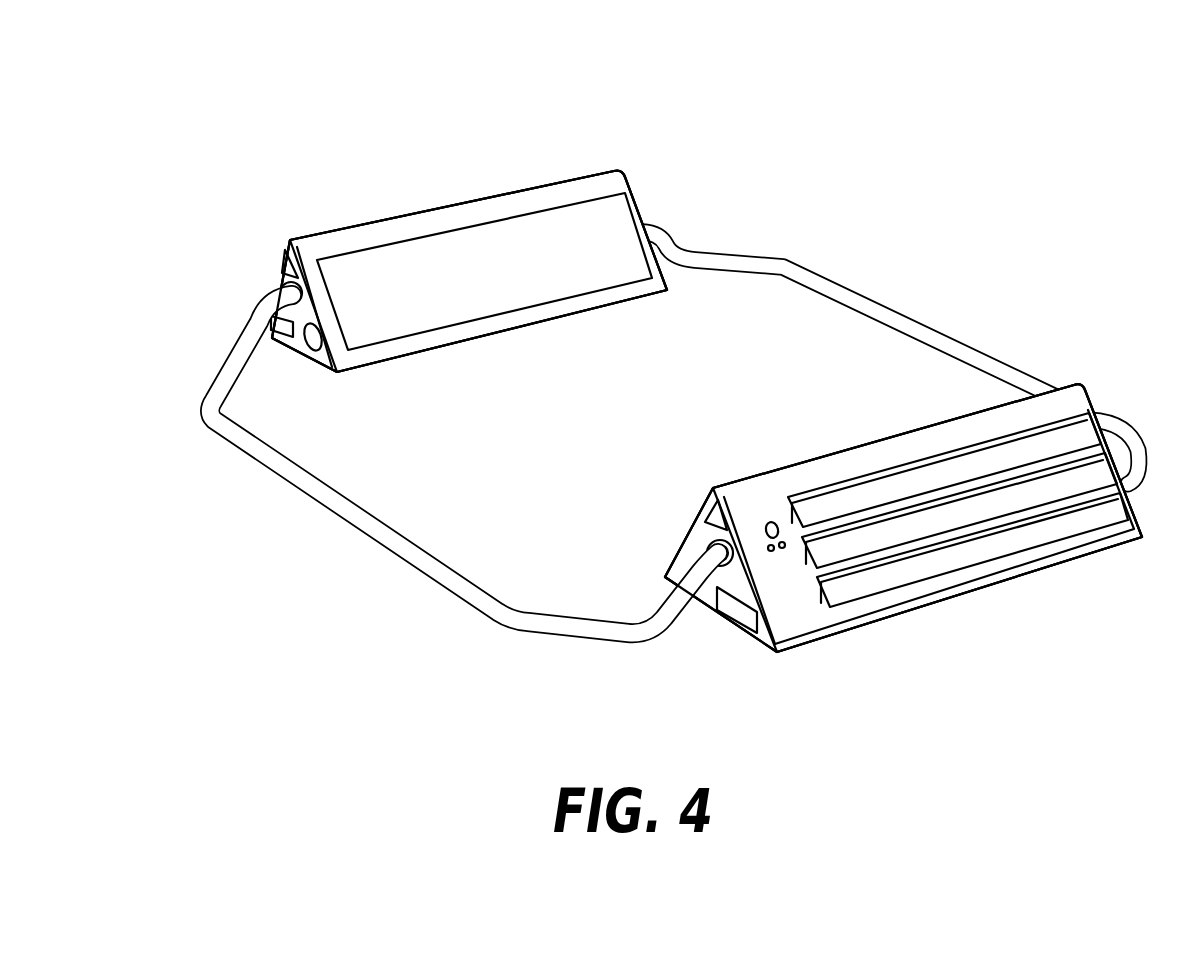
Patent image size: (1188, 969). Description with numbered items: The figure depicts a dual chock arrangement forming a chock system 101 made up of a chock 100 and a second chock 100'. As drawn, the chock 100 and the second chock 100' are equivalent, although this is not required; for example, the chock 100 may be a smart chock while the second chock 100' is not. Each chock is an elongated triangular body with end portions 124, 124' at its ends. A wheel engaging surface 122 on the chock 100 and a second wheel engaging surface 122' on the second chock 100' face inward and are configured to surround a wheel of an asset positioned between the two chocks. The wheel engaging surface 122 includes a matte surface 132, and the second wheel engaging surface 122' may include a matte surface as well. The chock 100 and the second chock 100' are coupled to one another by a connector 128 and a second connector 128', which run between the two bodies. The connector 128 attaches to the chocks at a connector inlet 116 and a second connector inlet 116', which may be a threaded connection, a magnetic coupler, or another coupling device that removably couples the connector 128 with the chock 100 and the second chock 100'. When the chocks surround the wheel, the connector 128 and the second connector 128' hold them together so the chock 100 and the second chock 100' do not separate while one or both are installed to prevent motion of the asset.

The chock 100 is at (472, 205).
The second chock 100' is at (923, 473).
The chock system 101 is at (930, 136).
The connector inlet 116 is at (228, 276).
The second connector inlet 116' is at (665, 512).
The wheel engaging surface 122 is at (478, 258).
The second wheel engaging surface 122' is at (927, 518).
The end cap 124 is at (304, 254).
The end cap 124' is at (772, 591).
The connector 128 is at (464, 464).
The second connector 128' is at (890, 358).
The matte surface 132 is at (517, 235).